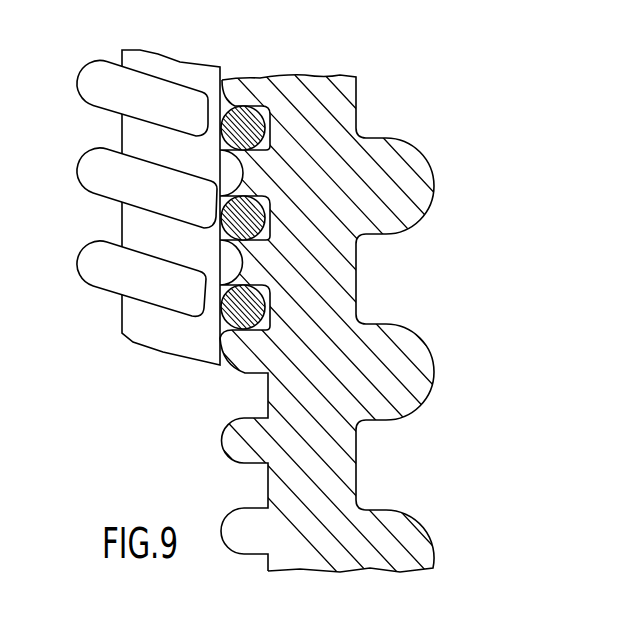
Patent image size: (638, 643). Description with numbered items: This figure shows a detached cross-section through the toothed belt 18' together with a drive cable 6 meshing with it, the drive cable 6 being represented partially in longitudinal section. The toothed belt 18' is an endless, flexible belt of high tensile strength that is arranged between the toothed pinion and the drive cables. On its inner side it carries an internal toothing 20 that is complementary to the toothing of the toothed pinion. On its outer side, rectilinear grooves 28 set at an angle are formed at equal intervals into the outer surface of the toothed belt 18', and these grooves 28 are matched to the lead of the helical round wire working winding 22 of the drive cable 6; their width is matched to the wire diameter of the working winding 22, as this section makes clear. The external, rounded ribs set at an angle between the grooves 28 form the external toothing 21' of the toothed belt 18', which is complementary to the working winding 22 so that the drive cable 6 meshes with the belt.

The drive cable 6 is at (133, 342).
The toothed belt 18' is at (327, 296).
The internal toothing 20 is at (385, 410).
The external toothing 21' is at (217, 454).
The working winding 22 is at (102, 173).
The grooves 28 is at (265, 113).